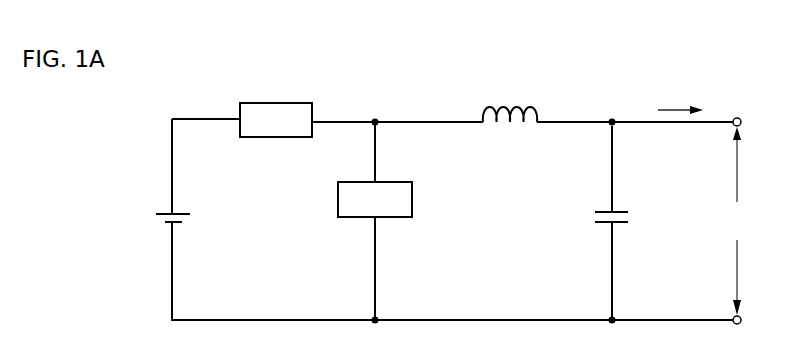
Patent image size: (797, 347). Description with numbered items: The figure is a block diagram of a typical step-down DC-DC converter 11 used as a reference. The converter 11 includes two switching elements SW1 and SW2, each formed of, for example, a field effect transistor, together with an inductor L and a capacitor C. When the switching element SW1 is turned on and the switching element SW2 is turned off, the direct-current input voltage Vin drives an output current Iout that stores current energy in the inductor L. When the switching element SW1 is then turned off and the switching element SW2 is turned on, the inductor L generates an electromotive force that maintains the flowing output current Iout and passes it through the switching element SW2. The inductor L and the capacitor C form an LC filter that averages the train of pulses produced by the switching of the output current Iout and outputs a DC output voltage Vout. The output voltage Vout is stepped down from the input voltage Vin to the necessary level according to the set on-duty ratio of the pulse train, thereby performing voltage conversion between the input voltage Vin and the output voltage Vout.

The step-down DC-DC converter 11 is at (602, 79).
The switching element SW1 is at (276, 120).
The switching element SW2 is at (375, 199).
The inductor L is at (510, 102).
The capacitor C is at (621, 218).
The input voltage Vin is at (153, 216).
The output voltage Vout is at (739, 221).
The output current Iout is at (680, 98).